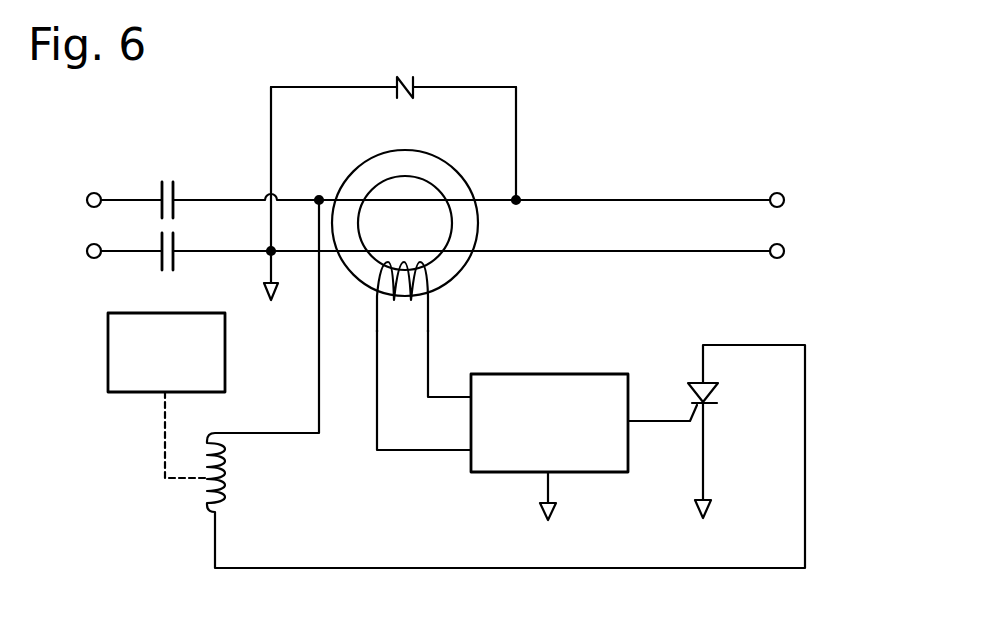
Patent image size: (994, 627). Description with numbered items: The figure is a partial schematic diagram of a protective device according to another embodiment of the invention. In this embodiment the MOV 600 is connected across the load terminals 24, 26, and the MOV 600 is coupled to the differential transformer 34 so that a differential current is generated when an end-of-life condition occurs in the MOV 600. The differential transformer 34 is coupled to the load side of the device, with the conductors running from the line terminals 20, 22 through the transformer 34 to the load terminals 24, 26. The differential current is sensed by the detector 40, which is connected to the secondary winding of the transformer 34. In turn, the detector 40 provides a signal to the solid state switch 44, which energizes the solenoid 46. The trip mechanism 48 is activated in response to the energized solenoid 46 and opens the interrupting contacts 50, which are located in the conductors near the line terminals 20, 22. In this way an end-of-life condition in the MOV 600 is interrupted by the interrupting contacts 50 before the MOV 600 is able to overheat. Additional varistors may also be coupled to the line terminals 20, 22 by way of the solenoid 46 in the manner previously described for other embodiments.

The line terminal 20 is at (92, 243).
The line terminal 22 is at (92, 192).
The load terminal 24 is at (781, 243).
The load terminal 26 is at (781, 192).
The differential transformer 34 is at (425, 154).
The detector 40 is at (546, 374).
The solid state switch 44 is at (708, 408).
The solenoid 46 is at (228, 478).
The trip mechanism 48 is at (167, 313).
The interrupting contacts 50 is at (169, 176).
The MOV 600 is at (414, 82).